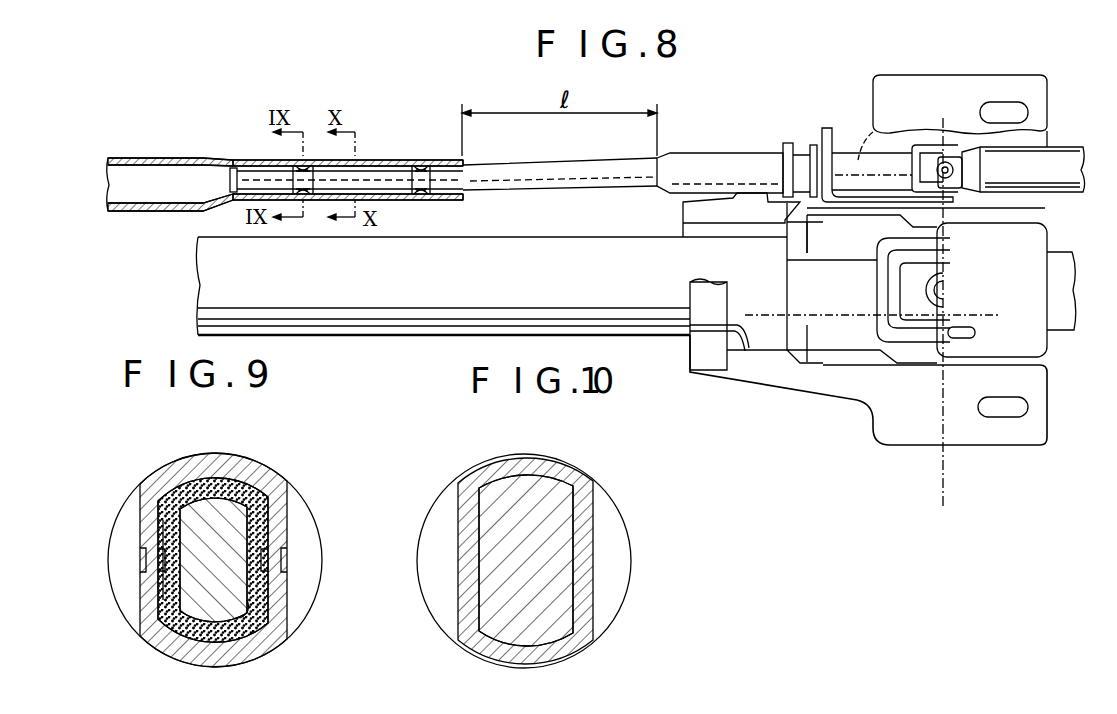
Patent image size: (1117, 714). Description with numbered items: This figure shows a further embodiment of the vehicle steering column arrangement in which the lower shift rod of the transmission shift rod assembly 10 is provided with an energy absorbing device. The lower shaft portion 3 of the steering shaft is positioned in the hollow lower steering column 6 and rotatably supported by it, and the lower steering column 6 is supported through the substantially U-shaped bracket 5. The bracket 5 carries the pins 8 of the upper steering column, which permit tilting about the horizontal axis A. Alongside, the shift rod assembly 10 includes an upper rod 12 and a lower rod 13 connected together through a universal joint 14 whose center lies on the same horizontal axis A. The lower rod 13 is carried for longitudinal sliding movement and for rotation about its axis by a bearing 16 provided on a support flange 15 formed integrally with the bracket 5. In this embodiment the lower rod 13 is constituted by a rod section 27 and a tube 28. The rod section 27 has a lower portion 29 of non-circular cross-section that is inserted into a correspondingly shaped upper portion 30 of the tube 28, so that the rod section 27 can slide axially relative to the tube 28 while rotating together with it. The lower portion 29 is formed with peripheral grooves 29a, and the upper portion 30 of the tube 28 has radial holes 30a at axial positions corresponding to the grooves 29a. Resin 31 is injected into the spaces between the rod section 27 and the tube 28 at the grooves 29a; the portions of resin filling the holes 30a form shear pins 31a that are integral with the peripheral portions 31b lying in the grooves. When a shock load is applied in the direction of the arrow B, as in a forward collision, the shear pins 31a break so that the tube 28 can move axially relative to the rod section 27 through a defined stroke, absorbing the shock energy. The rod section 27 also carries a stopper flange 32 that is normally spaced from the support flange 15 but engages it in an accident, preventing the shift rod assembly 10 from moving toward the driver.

In FIG. 8, the lower shaft portion 3 is at (835, 293).
In FIG. 8, the bracket 5 is at (1035, 385).
In FIG. 8, the lower steering column 6 is at (658, 322).
In FIG. 8, the pins 8 is at (925, 368).
In FIG. 8, the transmission shift rod assembly 10 is at (1053, 122).
In FIG. 8, the upper rod 12 is at (1062, 188).
In FIG. 8, the lower rod 13 is at (709, 134).
In FIG. 8, the universal joint 14 is at (938, 128).
In FIG. 8, the support flange 15 is at (829, 132).
In FIG. 8, the bearing 16 is at (813, 130).
In FIG. 8, the rod section 27 is at (674, 160).
In FIG. 8, the tube 28 is at (188, 158).
In FIG. 8, the lower portion 29 is at (496, 181).
In FIG. 9, the lower portion 29 is at (213, 560).
In FIG. 10, the lower portion 29 is at (560, 525).
In FIG. 8, the peripheral grooves 29a is at (292, 178).
In FIG. 9, the peripheral grooves 29a is at (247, 606).
In FIG. 8, the upper portion 30 is at (388, 202).
In FIG. 9, the upper portion 30 is at (178, 462).
In FIG. 10, the upper portion 30 is at (555, 466).
In FIG. 8, the radial holes 30a is at (300, 168).
In FIG. 9, the radial holes 30a is at (142, 560).
In FIG. 8, the resin 31 is at (361, 180).
In FIG. 9, the resin 31 is at (232, 478).
In FIG. 8, the shear pins 31a is at (303, 160).
In FIG. 9, the shear pins 31a is at (145, 578).
In FIG. 9, the peripheral portions 31b is at (163, 520).
In FIG. 8, the stopper flange 32 is at (790, 143).
In FIG. 8, the horizontal axis A is at (945, 455).
In FIG. 8, the arrow (forward collision direction) B is at (76, 183).